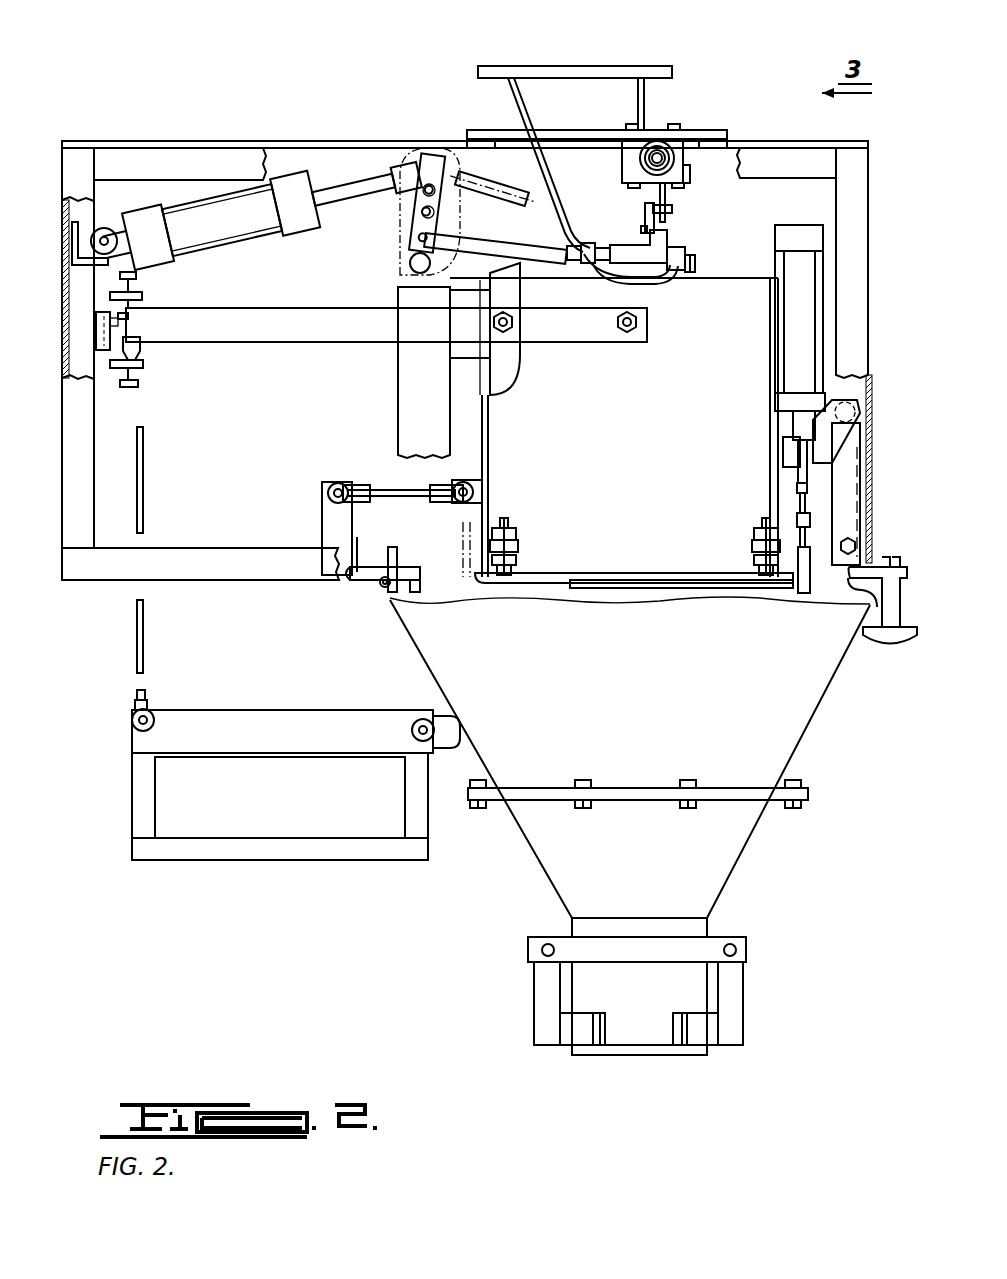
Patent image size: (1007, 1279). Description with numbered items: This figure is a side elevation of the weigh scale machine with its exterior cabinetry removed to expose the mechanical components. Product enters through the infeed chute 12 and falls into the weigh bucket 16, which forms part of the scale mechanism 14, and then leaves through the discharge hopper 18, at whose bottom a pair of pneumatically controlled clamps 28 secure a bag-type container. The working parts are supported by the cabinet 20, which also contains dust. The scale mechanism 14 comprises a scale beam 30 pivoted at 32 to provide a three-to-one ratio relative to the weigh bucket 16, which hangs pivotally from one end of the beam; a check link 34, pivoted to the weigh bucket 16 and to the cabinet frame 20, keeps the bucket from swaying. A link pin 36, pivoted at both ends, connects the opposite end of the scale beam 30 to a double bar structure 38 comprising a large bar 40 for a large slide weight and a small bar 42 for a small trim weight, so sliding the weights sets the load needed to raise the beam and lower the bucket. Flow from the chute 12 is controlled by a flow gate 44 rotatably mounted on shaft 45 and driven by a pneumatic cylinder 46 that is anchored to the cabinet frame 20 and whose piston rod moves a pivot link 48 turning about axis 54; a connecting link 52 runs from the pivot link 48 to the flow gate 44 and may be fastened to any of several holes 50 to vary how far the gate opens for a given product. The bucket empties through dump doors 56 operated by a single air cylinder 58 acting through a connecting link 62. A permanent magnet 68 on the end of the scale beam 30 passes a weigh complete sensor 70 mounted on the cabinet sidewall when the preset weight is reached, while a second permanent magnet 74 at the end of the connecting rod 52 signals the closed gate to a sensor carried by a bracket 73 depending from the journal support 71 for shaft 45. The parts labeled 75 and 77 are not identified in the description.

The infeed chute 12 is at (580, 72).
The scale mechanism 14 is at (252, 341).
The weigh bucket 16 is at (650, 472).
The discharge hopper 18 is at (740, 845).
The cabinet 20 is at (62, 454).
The pneumatically controlled clamps 28 is at (740, 1020).
The scale beam 30 is at (268, 318).
The pivot 32 is at (505, 330).
The check link 34 is at (395, 490).
The link pin 36 is at (145, 460).
The double bar structure 38 is at (128, 776).
The large bar 40 is at (352, 712).
The small bar 42 is at (365, 858).
The flow gate 44 is at (672, 280).
The shaft 45 is at (665, 148).
The pneumatic cylinder 46 is at (215, 205).
The pivot link 48 is at (436, 158).
The holes 50 is at (424, 216).
The connecting link 52 is at (486, 212).
The axis 54 is at (410, 265).
The dump doors 56 is at (698, 588).
The air cylinder 58 is at (795, 355).
The connecting link 62 is at (797, 495).
The permanent magnet 68 is at (125, 332).
The weigh complete sensor 70 is at (100, 310).
The journal support 71 is at (625, 153).
The bracket 73 is at (688, 184).
The permanent magnet 74 is at (644, 209).
The bracket block 75 is at (668, 238).
The pin 77 is at (672, 212).